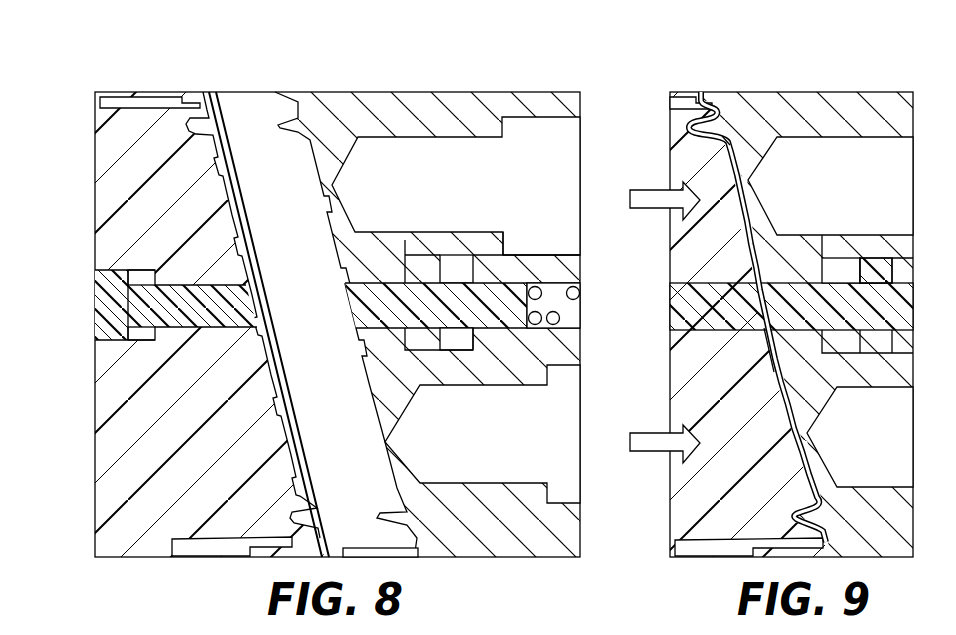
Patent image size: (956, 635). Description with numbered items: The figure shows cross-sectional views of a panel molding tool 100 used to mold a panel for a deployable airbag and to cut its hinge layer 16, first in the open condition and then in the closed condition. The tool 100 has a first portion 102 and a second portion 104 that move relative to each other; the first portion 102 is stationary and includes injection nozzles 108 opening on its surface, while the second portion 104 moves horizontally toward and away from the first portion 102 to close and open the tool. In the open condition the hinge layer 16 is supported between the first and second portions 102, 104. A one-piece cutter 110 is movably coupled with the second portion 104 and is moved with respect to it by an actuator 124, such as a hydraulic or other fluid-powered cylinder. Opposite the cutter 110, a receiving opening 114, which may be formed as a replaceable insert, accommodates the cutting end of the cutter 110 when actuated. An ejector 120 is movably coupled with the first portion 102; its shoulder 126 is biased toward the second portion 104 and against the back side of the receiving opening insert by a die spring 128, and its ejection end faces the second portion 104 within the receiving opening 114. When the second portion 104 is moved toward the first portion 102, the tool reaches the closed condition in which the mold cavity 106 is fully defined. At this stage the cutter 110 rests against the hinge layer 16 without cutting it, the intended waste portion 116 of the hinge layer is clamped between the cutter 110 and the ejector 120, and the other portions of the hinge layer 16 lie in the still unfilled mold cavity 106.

In FIG. 8, the molding tool 100 is at (128, 70).
In FIG. 9, the molding tool 100 is at (657, 70).
In FIG. 8, the first portion 102 is at (363, 93).
In FIG. 9, the first portion 102 is at (888, 96).
In FIG. 8, the second portion 104 is at (163, 92).
In FIG. 9, the second portion 104 is at (688, 113).
In FIG. 9, the mold cavity 106 is at (738, 136).
In FIG. 8, the injection nozzles 108 is at (463, 148).
In FIG. 9, the injection nozzles 108 is at (830, 186).
In FIG. 8, the cutter 110 is at (173, 285).
In FIG. 9, the cutter 110 is at (684, 326).
In FIG. 8, the receiving opening 114 is at (378, 250).
In FIG. 9, the waste portion 116 is at (764, 330).
In FIG. 8, the ejector 120 is at (362, 312).
In FIG. 9, the ejector 120 is at (843, 267).
In FIG. 8, the actuator 124 is at (113, 340).
In FIG. 8, the shoulder 126 is at (388, 380).
In FIG. 8, the die spring 128 is at (543, 283).
In FIG. 8, the hinge layer 16 is at (240, 190).
In FIG. 9, the hinge layer 16 is at (752, 221).